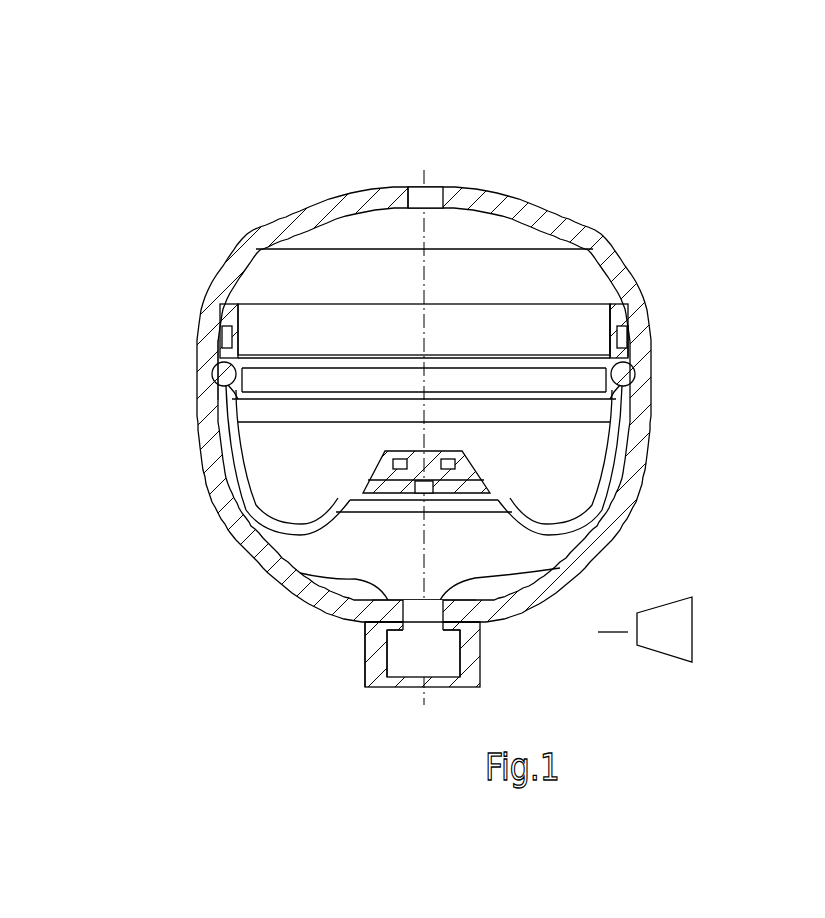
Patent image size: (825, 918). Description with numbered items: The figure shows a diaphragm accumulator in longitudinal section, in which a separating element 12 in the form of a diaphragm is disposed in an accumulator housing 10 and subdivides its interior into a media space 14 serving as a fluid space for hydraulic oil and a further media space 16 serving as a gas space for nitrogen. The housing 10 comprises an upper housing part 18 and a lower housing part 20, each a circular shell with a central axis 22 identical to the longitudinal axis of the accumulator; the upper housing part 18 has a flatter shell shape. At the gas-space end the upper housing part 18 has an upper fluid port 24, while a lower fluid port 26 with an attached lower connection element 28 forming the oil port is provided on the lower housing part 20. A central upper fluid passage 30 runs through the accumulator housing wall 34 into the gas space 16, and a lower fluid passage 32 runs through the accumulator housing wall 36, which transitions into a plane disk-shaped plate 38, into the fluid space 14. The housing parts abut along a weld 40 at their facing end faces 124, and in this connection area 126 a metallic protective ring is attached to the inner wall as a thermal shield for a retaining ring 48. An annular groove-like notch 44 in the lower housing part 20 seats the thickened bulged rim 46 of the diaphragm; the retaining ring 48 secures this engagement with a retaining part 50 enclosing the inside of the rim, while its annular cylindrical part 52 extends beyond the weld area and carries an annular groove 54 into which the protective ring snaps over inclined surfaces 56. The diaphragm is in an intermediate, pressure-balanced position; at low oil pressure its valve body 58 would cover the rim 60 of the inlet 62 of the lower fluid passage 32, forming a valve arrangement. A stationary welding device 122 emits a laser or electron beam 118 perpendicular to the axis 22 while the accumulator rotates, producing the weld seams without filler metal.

The accumulator housing 10 is at (258, 240).
The separating element 12 is at (201, 436).
The media space 14 is at (333, 569).
The further media space 16 is at (353, 254).
The upper housing part 18 is at (424, 404).
The lower housing part 20 is at (214, 472).
The central axis 22 is at (419, 712).
The upper fluid port 24 is at (443, 190).
The lower fluid port 26 is at (395, 640).
The lower connection element 28 is at (470, 677).
The upper fluid passage 30 is at (410, 200).
The lower fluid passage 32 is at (362, 626).
The accumulator housing wall 34 is at (412, 430).
The accumulator housing wall 36 is at (424, 457).
The plate 38 is at (478, 610).
The weld 40 is at (622, 335).
The annular groove-like notch 44 is at (634, 382).
The bulged rim 46 is at (213, 372).
The retaining ring 48 is at (424, 363).
The retaining part 50 is at (626, 398).
The annular cylindrical part 52 is at (222, 342).
The annular groove 54 is at (630, 344).
The inclined surfaces 56 is at (224, 330).
The valve body 58 is at (470, 478).
The rim 60 is at (362, 585).
The inlet 62 is at (480, 580).
The laser or electron beam 118 is at (603, 634).
The welding device 122 is at (667, 640).
The facing end faces 124 is at (619, 331).
The connection area 126 is at (622, 337).